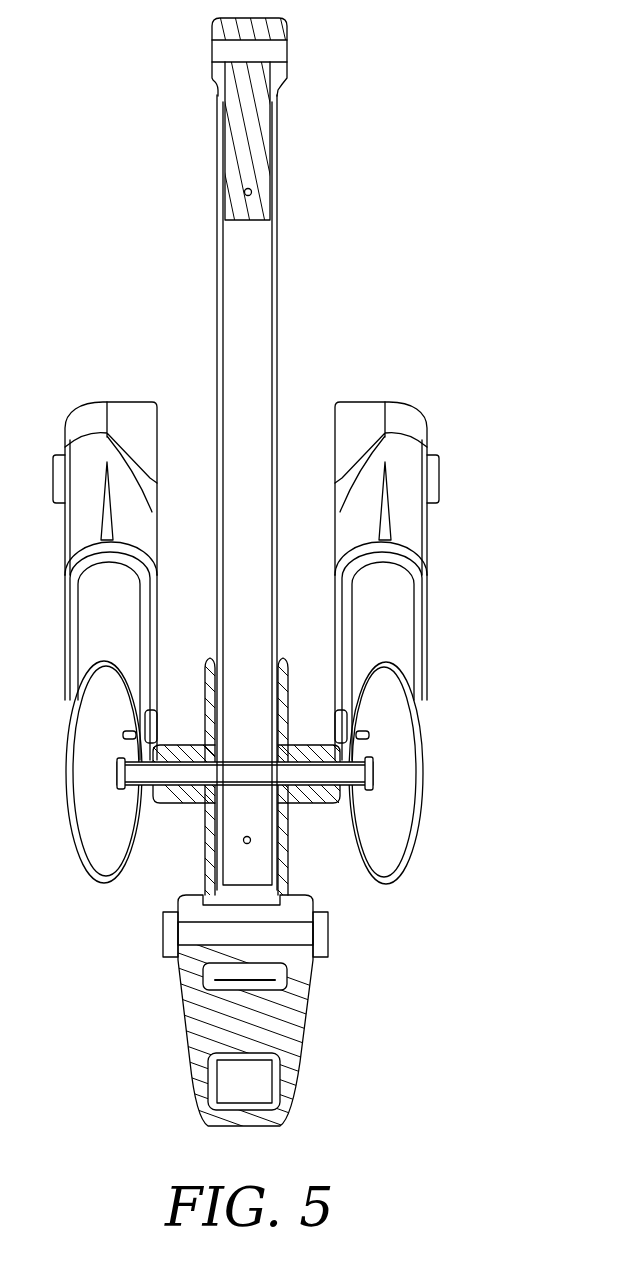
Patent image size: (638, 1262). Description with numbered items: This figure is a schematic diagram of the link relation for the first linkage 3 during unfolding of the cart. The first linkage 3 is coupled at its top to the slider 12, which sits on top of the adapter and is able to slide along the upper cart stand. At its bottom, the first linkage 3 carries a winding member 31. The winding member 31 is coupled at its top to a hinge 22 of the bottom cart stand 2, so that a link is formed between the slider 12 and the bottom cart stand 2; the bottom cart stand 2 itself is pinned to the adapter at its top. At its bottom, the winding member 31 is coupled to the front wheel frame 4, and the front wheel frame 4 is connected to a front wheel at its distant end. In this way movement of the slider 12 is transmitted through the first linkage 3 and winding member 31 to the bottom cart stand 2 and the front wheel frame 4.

The slider 12 is at (262, 153).
The first linkage 3 is at (272, 350).
The bottom cart stand 2 is at (413, 769).
The winding member 31 is at (306, 755).
The hinge 22 is at (315, 775).
The front wheel frame 4 is at (293, 997).